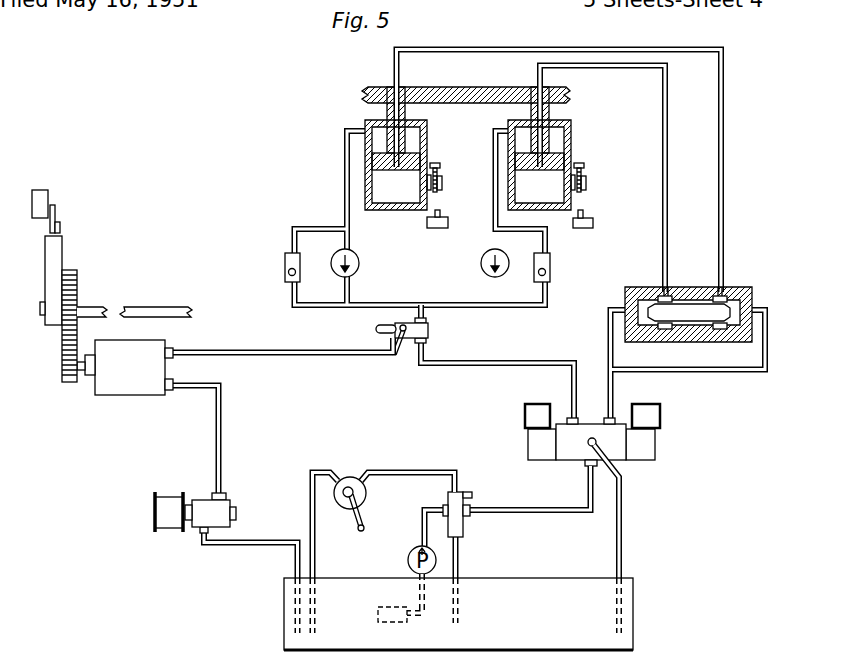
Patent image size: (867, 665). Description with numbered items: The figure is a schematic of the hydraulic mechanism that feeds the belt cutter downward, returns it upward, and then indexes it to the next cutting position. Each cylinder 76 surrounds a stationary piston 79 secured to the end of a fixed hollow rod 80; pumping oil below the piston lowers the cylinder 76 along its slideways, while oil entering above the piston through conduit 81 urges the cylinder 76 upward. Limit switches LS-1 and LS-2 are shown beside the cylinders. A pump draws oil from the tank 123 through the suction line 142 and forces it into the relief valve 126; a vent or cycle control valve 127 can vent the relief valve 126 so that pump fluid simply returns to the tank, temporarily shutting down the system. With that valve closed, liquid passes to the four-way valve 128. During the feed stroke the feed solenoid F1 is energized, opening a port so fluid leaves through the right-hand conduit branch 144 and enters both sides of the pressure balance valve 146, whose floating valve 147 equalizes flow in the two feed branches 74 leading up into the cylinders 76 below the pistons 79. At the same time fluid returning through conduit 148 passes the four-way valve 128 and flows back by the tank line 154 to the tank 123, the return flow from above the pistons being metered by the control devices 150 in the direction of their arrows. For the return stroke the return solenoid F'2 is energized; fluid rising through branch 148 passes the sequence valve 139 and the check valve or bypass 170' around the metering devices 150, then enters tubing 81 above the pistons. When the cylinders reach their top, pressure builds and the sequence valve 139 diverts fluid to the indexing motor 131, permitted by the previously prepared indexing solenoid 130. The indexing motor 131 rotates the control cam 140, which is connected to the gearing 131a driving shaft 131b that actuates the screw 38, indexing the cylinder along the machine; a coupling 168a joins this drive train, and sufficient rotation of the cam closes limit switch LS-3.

The hydraulic conduit 74 is at (392, 67).
The fixed hollow rod 80 is at (406, 108).
The hydraulic conduit 81 is at (346, 128).
The stationary piston 79 is at (377, 162).
The cylinder 76 is at (383, 211).
The limit switch LS-1 is at (461, 209).
The limit switch LS-2 is at (594, 222).
The limit switch LS-3 is at (42, 196).
The metering or control device 150 is at (359, 268).
The check valve or bypass 170' is at (423, 262).
The conduit 148 is at (571, 386).
The right-hand conduit branch 144 is at (614, 388).
The pressure balance valve 146 is at (740, 287).
The floating valve 147 is at (689, 306).
The sequence valve 139 is at (393, 356).
The four-way valve 128 is at (612, 447).
The feed solenoid F1 is at (525, 413).
The return solenoid F'2 is at (671, 414).
The tank line 154 is at (623, 552).
The relief valve 126 is at (464, 527).
The suction line 142 is at (316, 562).
The vent or cycle control valve 127 is at (347, 480).
The indexing motor 131 is at (136, 353).
The indexing solenoid 130 is at (172, 521).
The tank 123 is at (634, 612).
The control cam 140 is at (62, 250).
The gearing 131a is at (58, 331).
The driving shaft 131b is at (88, 313).
The screw 38 is at (168, 312).
The coupling 168a is at (82, 372).